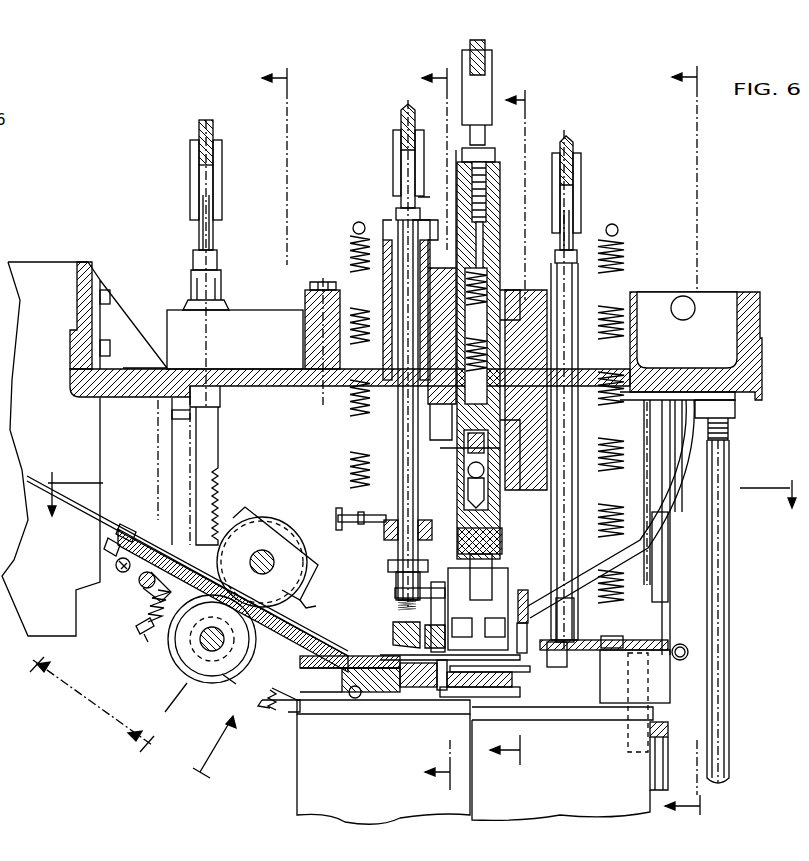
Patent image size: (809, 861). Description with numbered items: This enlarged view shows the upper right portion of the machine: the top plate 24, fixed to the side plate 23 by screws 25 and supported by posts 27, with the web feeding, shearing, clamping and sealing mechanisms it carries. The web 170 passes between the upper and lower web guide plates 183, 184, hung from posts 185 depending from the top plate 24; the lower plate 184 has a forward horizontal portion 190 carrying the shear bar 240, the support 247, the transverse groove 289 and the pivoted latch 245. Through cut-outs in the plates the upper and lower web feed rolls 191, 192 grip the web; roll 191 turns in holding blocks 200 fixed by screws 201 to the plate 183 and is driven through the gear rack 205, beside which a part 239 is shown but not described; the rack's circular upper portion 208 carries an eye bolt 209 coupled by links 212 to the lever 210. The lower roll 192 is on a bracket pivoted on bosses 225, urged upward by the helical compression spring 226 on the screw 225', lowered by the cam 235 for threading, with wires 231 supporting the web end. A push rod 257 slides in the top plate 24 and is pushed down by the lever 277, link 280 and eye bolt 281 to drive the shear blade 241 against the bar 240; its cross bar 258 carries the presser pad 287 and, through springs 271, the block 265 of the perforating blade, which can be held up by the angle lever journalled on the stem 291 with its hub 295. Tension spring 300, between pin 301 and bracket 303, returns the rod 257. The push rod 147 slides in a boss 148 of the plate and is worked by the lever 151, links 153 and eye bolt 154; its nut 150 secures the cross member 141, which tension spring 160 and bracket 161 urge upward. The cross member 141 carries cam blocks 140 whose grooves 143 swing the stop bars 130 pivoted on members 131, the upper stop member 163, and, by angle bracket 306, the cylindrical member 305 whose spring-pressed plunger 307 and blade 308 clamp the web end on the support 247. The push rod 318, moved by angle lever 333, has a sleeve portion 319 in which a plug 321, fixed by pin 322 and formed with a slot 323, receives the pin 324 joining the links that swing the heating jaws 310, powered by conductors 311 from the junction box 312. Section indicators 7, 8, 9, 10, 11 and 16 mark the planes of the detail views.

The lever 210 is at (214, 132).
The links 212 is at (218, 170).
The eye bolt 209 is at (214, 240).
The upper portion of the rack 208 is at (216, 288).
The screws 25 is at (110, 298).
The top plate 24 is at (252, 372).
The web 170 is at (48, 498).
The posts 185 is at (162, 470).
The upper web guide plate 183 is at (126, 522).
The lower web guide plate 184 is at (118, 541).
The bosses 225 is at (93, 565).
The side plate 23 is at (42, 586).
The cam 235 is at (140, 587).
The screw 225' is at (124, 627).
The helical compression spring 226 is at (168, 640).
The lower web feed roll 192 is at (212, 683).
The section line 16 is at (142, 711).
The wires 231 is at (244, 683).
The latch 245 is at (270, 704).
The lower plate extension 190 is at (372, 682).
The holding blocks 200 is at (318, 565).
The screws 201 is at (312, 604).
The upper web feed roll 191 is at (278, 528).
The bolt 239 is at (185, 444).
The gear rack 205 is at (222, 458).
The tension spring 300 is at (354, 440).
The pin 301 is at (340, 512).
The push rod 257 is at (397, 225).
The cross bar 258 is at (428, 520).
The plug 321 is at (434, 524).
The bracket 303 is at (353, 224).
The vertical stem 291 is at (326, 282).
The hub portion 295 is at (306, 298).
The lever 277 is at (404, 108).
The link 280 is at (424, 156).
The eye bolt 281 is at (426, 179).
The angle lever 333 is at (486, 62).
The push rod 318 is at (494, 226).
The pin 324 is at (460, 450).
The cylindrical sleeve portion 319 is at (490, 462).
The slot 323 is at (486, 500).
The pin 322 is at (502, 540).
The heating jaws 310 is at (503, 572).
The cylindrical member 305 is at (504, 582).
The helical compression springs 271 is at (398, 608).
The block 265 is at (396, 628).
The presser pad 287 is at (382, 656).
The shear blade 241 is at (446, 657).
The groove 289 is at (402, 690).
The shear bar 240 is at (442, 692).
The support 247 is at (482, 700).
The angle bracket 306 is at (575, 652).
The plunger 307 is at (522, 656).
The blade 308 is at (512, 674).
The nut 150 is at (566, 668).
The lever 151 is at (568, 136).
The links 153 is at (580, 190).
The adjustable eye bolt 154 is at (568, 234).
The bracket 161 is at (618, 228).
The tension spring 160 is at (622, 266).
The push rod 147 is at (552, 268).
The boss 148 is at (526, 432).
The junction box 312 is at (731, 336).
The members 131 is at (660, 405).
The conductors 311 is at (733, 430).
The posts 27 is at (730, 462).
The cross member 141 is at (624, 640).
The stop members 130 is at (665, 590).
The cam grooves 143 is at (650, 678).
The cam blocks 140 is at (662, 694).
The stop member 163 is at (668, 730).
The section line 7 is at (158, 410).
The section line 8 is at (430, 429).
The section line 9 is at (502, 427).
The section line 10 is at (676, 441).
The section line 11 is at (423, 505).